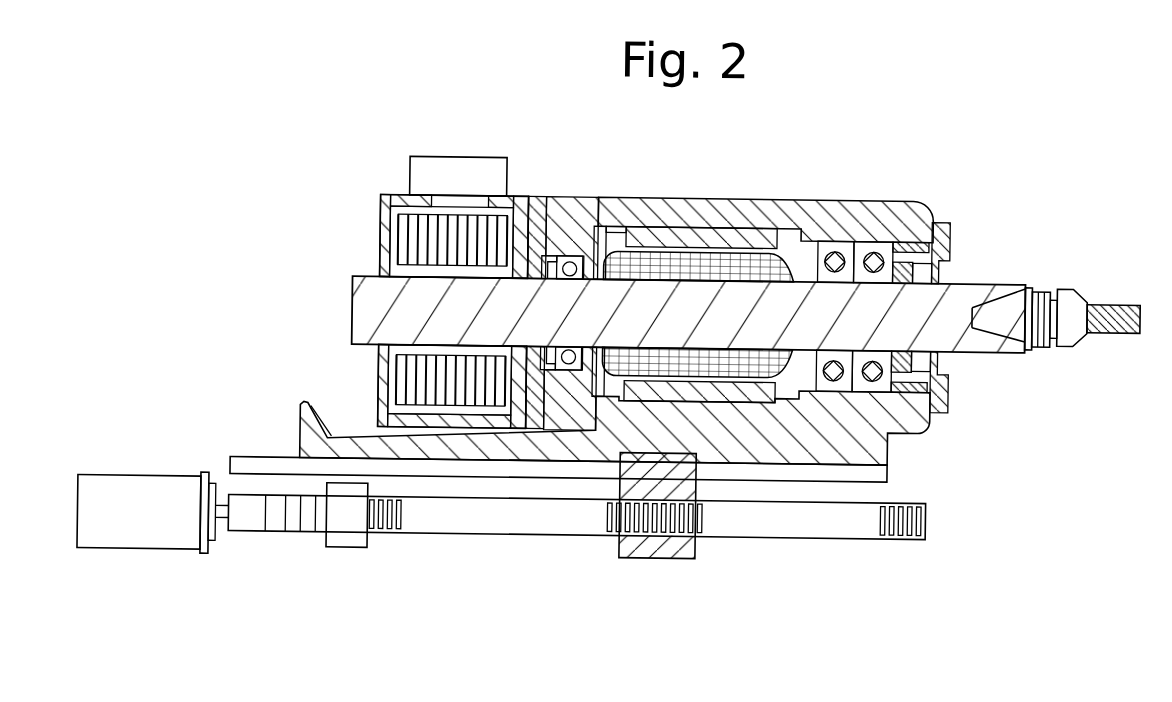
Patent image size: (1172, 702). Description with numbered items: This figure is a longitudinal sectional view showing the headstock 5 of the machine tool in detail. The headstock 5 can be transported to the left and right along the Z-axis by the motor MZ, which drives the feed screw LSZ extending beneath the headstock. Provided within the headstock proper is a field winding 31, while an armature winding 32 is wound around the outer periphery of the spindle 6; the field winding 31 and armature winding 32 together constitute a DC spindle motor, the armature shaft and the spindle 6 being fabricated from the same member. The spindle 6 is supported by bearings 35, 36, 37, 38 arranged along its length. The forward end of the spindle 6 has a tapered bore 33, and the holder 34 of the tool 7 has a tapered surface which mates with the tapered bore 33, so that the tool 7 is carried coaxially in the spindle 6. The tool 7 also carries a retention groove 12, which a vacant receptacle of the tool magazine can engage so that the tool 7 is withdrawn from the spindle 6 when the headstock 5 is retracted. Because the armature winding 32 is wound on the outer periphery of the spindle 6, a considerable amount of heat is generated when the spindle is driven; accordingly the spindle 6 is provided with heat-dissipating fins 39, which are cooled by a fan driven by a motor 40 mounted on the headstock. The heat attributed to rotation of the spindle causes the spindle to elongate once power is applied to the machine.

The headstock 5 is at (853, 145).
The spindle 6 is at (996, 280).
The tool 7 is at (1095, 306).
The retention groove 12 is at (1033, 285).
The field winding 31 is at (712, 232).
The armature winding 32 is at (792, 276).
The tapered bore 33 is at (1000, 330).
The holder 34 is at (990, 318).
The bearing 35 is at (836, 248).
The bearing 36 is at (873, 384).
The bearing 37 is at (569, 264).
The bearing 38 is at (571, 368).
The heat-dissipating fins 39 is at (452, 230).
The motor 40 is at (453, 162).
The motor MZ is at (153, 544).
The feed screw LSZ is at (526, 532).